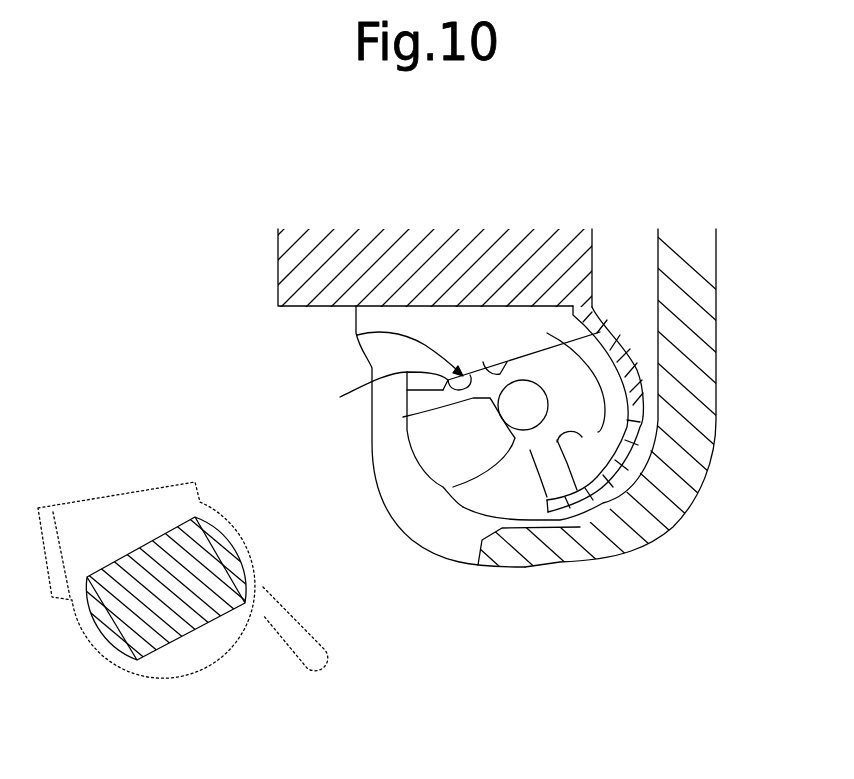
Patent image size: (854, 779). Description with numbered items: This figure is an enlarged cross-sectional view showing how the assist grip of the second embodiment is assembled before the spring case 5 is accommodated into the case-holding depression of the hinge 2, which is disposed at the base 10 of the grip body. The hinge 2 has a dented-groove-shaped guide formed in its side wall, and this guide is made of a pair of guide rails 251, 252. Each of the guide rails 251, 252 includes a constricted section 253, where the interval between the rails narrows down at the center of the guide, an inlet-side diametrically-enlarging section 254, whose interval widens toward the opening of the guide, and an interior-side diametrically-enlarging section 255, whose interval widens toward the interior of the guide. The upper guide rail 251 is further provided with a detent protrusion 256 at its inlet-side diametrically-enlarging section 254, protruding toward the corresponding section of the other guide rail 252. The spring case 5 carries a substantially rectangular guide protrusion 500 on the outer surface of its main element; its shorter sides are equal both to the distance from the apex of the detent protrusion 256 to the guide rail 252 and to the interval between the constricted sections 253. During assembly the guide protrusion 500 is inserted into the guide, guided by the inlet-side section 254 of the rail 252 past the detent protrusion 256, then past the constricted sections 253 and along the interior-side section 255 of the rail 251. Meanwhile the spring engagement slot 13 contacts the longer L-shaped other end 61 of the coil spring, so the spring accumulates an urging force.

The hinge 2 is at (488, 243).
The base 10 is at (643, 513).
The engagement slot for spring 13 is at (490, 535).
The interior-side diametrically-enlarging section 255 is at (540, 345).
The constricted section 253 is at (483, 362).
The guide rail 251 is at (357, 335).
The detent protrusion 256 is at (470, 405).
The inlet-side diametrically-enlarging section 254 is at (370, 382).
The guide rail 252 is at (587, 434).
The spring case 5 is at (143, 490).
The guide protrusion 500 is at (163, 620).
The longer L-shaped other end of the coil spring 61 is at (305, 633).